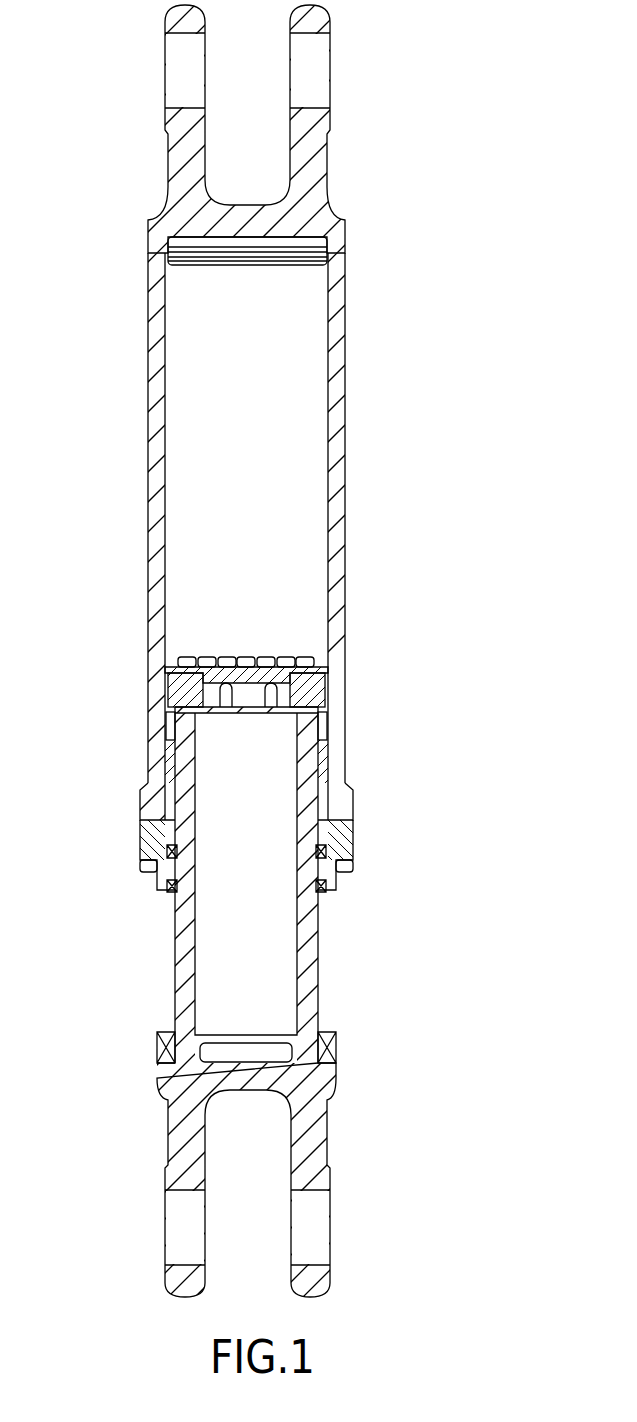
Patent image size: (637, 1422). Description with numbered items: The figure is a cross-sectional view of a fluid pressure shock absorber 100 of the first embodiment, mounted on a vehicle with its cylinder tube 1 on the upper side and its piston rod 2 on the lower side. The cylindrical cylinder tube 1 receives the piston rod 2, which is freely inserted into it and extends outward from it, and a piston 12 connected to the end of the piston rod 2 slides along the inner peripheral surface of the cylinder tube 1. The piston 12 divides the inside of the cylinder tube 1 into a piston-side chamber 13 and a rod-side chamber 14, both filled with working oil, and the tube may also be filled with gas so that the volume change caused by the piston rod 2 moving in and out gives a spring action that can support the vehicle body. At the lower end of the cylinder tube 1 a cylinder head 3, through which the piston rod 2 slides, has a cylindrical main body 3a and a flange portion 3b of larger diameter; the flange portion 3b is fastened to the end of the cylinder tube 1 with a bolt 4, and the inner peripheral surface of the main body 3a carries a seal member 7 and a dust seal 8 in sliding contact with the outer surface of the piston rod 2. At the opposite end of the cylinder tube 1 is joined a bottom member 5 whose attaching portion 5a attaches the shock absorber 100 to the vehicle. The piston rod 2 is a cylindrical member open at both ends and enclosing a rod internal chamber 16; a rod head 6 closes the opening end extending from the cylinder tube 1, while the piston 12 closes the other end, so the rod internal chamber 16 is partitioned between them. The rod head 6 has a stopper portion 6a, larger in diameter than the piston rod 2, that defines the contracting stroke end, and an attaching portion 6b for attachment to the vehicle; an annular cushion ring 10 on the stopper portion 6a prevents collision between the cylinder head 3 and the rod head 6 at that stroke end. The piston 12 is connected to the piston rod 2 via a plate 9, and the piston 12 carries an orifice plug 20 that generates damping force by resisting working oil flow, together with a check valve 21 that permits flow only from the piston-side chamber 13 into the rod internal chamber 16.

The shock absorber 100 is at (396, 111).
The cylinder tube 1 is at (338, 418).
The piston rod 2 is at (331, 923).
The cylinder head 3 is at (293, 836).
The main body 3a is at (345, 805).
The flange portion 3b is at (272, 855).
The bolt 4 is at (350, 866).
The bottom member 5 is at (244, 135).
The attaching portion 5a is at (185, 108).
The rod head 6 is at (240, 1161).
The stopper portion 6a is at (157, 1047).
The attaching portion 6b is at (307, 1190).
The seal member 7 is at (170, 855).
The dust seal 8 is at (165, 893).
The plate 9 is at (167, 718).
The annular cushion ring 10 is at (160, 1040).
The piston 12 is at (316, 667).
The piston-side chamber 13 is at (188, 355).
The rod-side chamber 14 is at (170, 765).
The rod internal chamber 16 is at (262, 993).
The orifice plug 20 is at (175, 690).
The check valve 21 is at (310, 700).